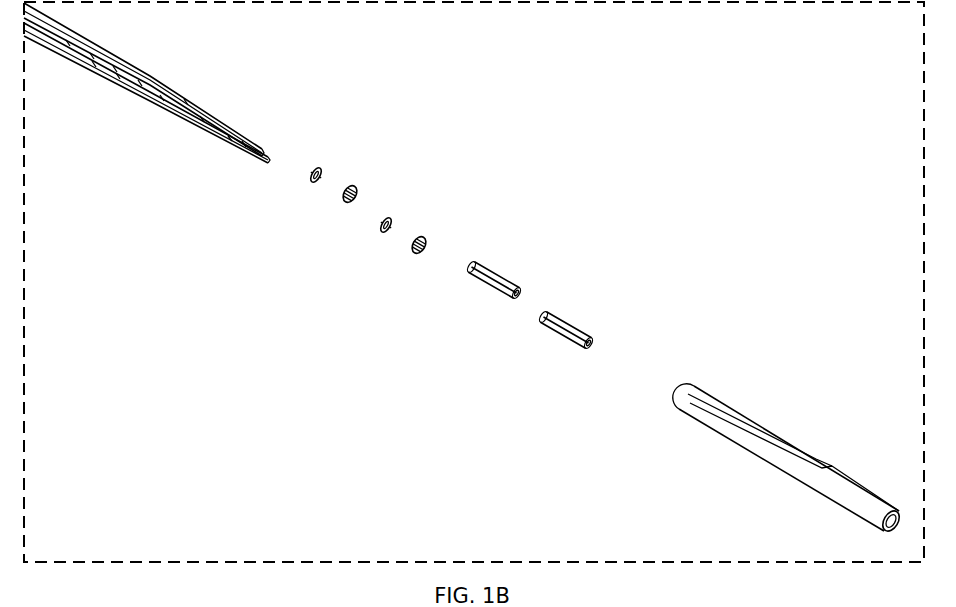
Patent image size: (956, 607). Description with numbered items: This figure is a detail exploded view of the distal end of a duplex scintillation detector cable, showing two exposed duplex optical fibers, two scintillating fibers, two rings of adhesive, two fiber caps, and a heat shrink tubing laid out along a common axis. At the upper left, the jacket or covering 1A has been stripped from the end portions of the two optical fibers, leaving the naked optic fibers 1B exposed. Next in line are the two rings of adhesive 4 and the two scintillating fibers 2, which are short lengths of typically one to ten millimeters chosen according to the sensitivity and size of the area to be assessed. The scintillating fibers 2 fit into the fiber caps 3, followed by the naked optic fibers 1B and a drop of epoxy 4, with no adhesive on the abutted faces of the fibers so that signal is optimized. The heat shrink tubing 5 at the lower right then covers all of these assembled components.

The jacket or covering 1A is at (138, 62).
The naked optic fibers 1B is at (183, 92).
The scintillating fibers 2 is at (322, 170).
The fiber cap 3 is at (500, 270).
The adhesive 4 is at (357, 187).
The heat shrink tubing 5 is at (850, 477).